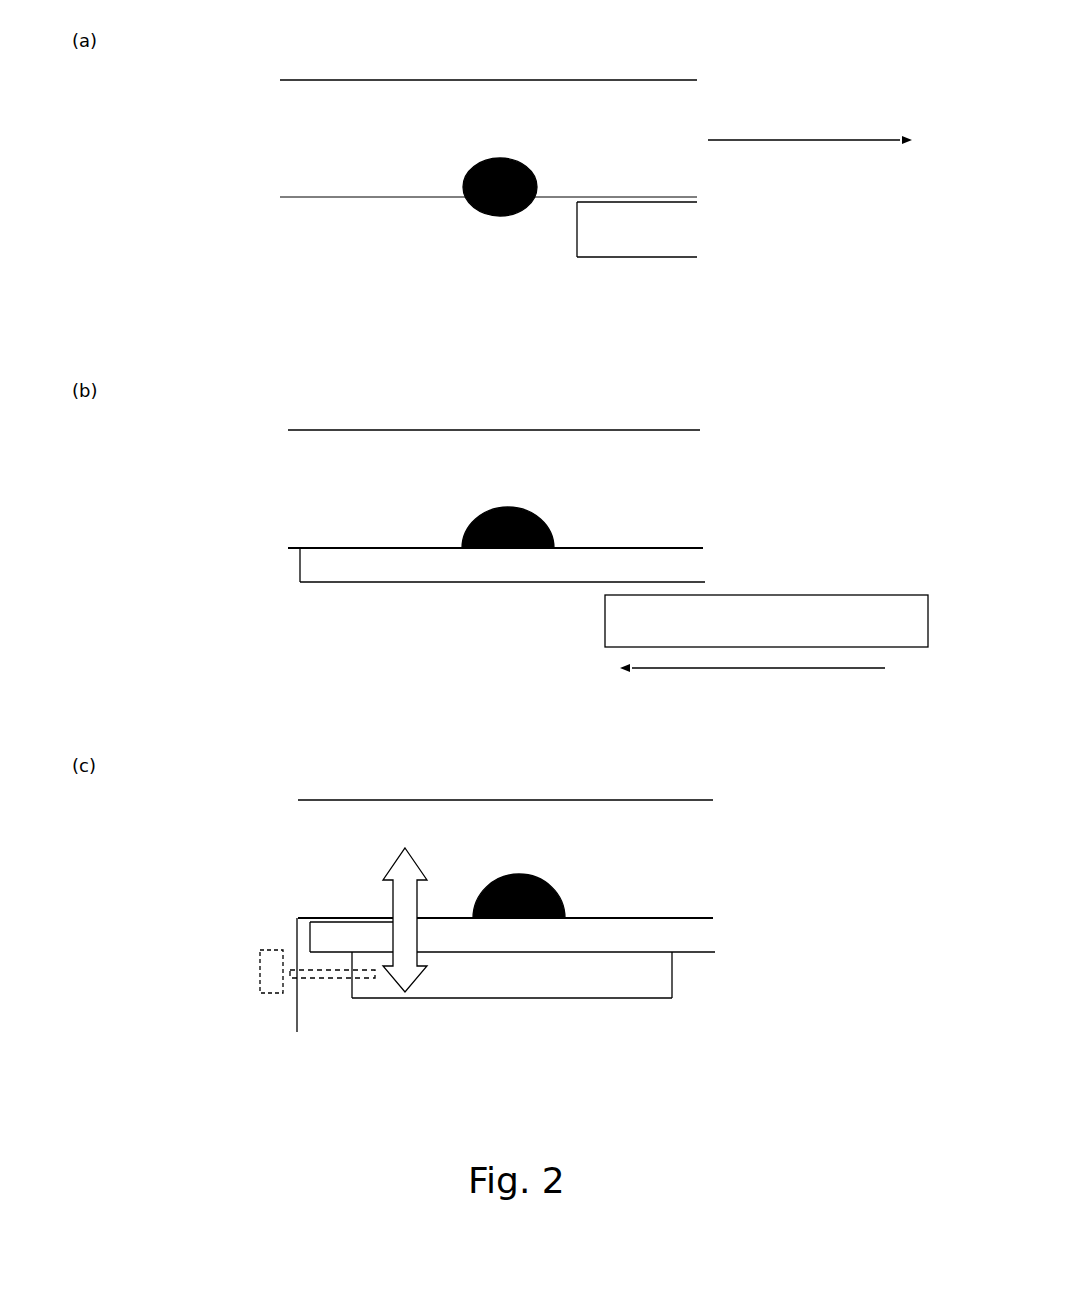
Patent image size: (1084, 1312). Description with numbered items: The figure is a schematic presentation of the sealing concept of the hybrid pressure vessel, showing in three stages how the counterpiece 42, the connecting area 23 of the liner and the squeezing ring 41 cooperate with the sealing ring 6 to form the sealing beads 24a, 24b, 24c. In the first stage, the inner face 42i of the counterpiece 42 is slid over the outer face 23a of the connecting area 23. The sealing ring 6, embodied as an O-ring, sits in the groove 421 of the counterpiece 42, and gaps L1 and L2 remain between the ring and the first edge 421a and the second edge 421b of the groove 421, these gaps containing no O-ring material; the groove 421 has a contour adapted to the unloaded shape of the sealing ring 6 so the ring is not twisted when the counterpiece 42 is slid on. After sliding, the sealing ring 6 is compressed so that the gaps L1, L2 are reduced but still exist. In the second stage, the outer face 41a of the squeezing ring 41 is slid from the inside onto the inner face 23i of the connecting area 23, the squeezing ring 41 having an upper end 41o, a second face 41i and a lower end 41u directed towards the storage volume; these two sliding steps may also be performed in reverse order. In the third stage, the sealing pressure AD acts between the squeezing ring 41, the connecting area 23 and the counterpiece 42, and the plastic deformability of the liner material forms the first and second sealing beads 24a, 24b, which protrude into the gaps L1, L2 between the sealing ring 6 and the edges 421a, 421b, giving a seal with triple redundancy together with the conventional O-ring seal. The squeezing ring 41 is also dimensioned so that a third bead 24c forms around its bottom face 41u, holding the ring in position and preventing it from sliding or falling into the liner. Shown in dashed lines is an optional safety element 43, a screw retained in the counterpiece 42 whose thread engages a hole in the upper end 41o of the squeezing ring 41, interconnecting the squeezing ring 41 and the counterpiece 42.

The counterpiece 42 is at (260, 123).
The groove 421 is at (499, 154).
The first edge 421a is at (545, 177).
The second edge 421b is at (456, 178).
The inner face of counterpiece 42i is at (300, 206).
The connecting area of liner 23 is at (668, 232).
The connecting area outer face of liner 23a is at (637, 196).
The connecting area inner face of liner 23i is at (631, 265).
The sealing ring 6 is at (498, 220).
The gap L1 is at (541, 214).
The gap L2 is at (455, 216).
The squeezing ring 41 is at (822, 634).
The first face of squeezing ring 41a is at (870, 586).
The upper end of squeezing ring 41o is at (616, 620).
The second face of squeezing ring 41i is at (909, 657).
The lower end of squeezing ring 41u is at (672, 1014).
The safety element 43 is at (252, 973).
The first sealing bead 24a is at (558, 930).
The second sealing bead 24b is at (474, 930).
The third bead 24c is at (678, 940).
The sealing pressure AD is at (401, 846).